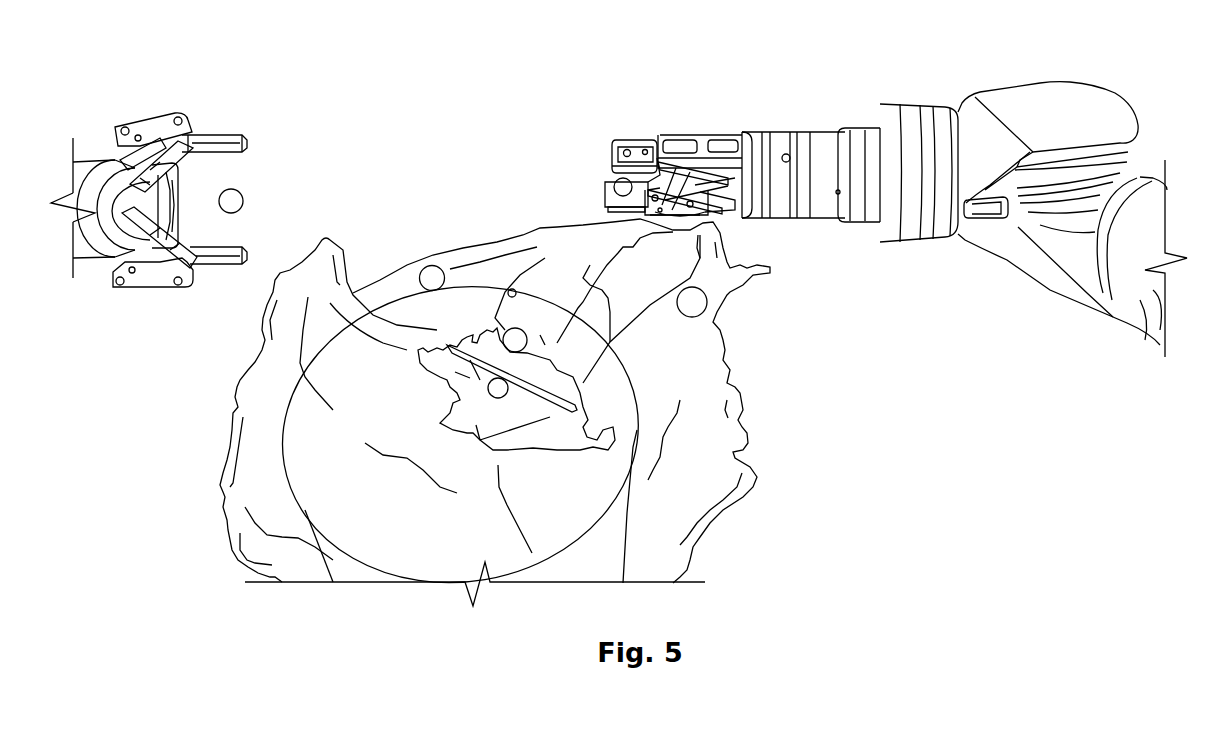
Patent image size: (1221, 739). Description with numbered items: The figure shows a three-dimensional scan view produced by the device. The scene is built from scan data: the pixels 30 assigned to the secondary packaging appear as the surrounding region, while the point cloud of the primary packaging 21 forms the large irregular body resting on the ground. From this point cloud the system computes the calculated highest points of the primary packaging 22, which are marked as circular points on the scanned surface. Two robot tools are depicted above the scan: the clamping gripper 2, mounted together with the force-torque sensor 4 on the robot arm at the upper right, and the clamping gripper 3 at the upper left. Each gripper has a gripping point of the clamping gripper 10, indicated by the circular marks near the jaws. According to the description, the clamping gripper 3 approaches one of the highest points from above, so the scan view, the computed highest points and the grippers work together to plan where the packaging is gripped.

The clamping gripper 2 is at (637, 140).
The clamping gripper 3 is at (211, 128).
The force-torque sensor 4 is at (829, 166).
The gripping point of the clamping gripper 10 is at (606, 178).
The point cloud of the primary packaging 21 is at (752, 432).
The calculated highest point of the primary packaging 22 is at (712, 304).
The pixels assigned to the secondary packaging 30 is at (580, 368).